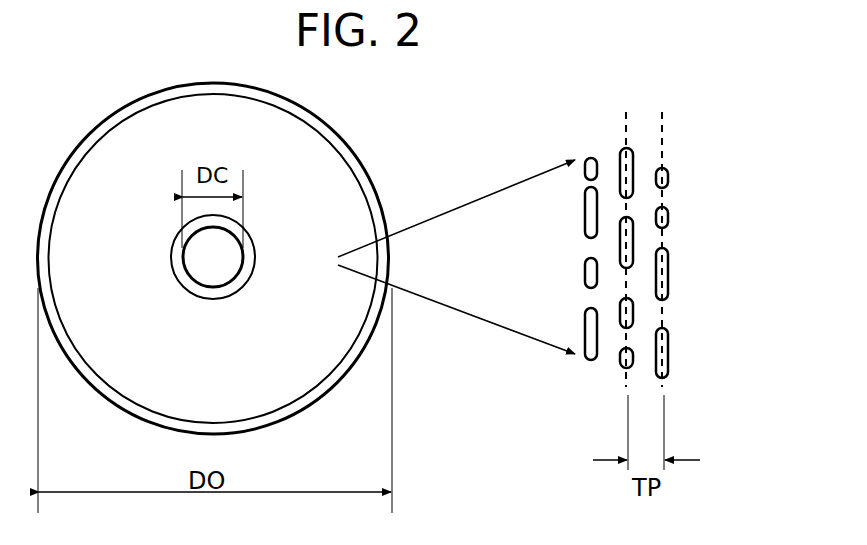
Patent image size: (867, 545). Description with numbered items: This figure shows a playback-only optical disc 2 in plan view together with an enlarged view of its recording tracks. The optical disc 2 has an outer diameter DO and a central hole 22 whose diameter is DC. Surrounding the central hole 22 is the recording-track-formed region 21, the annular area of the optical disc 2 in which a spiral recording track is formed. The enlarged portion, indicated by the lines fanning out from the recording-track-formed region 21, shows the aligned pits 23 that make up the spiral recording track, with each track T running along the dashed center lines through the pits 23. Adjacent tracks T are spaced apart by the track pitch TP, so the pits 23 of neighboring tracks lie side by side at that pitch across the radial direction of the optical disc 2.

The optical disc 2 is at (83, 133).
The recording-track-formed region 21 is at (223, 254).
The central hole 22 is at (196, 276).
The pit of optical disc 23 is at (624, 150).
The track T is at (662, 140).